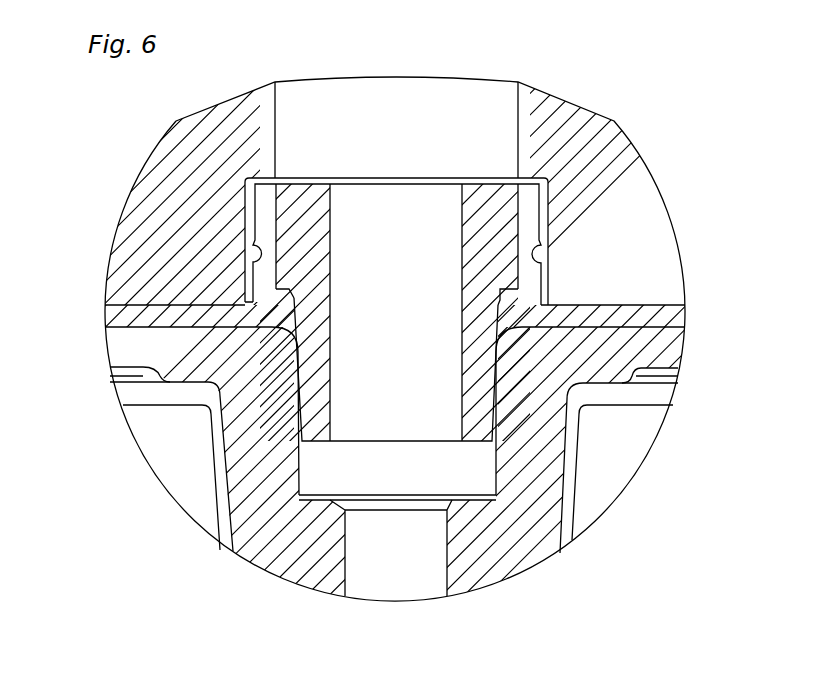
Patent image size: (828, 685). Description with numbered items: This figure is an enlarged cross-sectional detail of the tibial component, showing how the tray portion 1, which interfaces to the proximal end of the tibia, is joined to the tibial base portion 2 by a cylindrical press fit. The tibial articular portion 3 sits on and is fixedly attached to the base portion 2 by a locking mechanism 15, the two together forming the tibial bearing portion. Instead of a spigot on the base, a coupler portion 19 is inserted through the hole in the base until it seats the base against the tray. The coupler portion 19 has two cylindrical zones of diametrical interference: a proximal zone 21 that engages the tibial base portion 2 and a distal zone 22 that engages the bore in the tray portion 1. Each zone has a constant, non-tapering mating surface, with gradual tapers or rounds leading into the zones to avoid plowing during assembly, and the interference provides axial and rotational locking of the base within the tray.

The tray portion 1 is at (267, 563).
The tibial base portion 2 is at (107, 315).
The tibial articular portion 3 is at (165, 214).
The locking mechanism 15 is at (557, 243).
The coupler portion 19 is at (302, 214).
The proximal zone of diametrical interference 21 is at (503, 308).
The distal zone of diametrical interference 22 is at (503, 365).